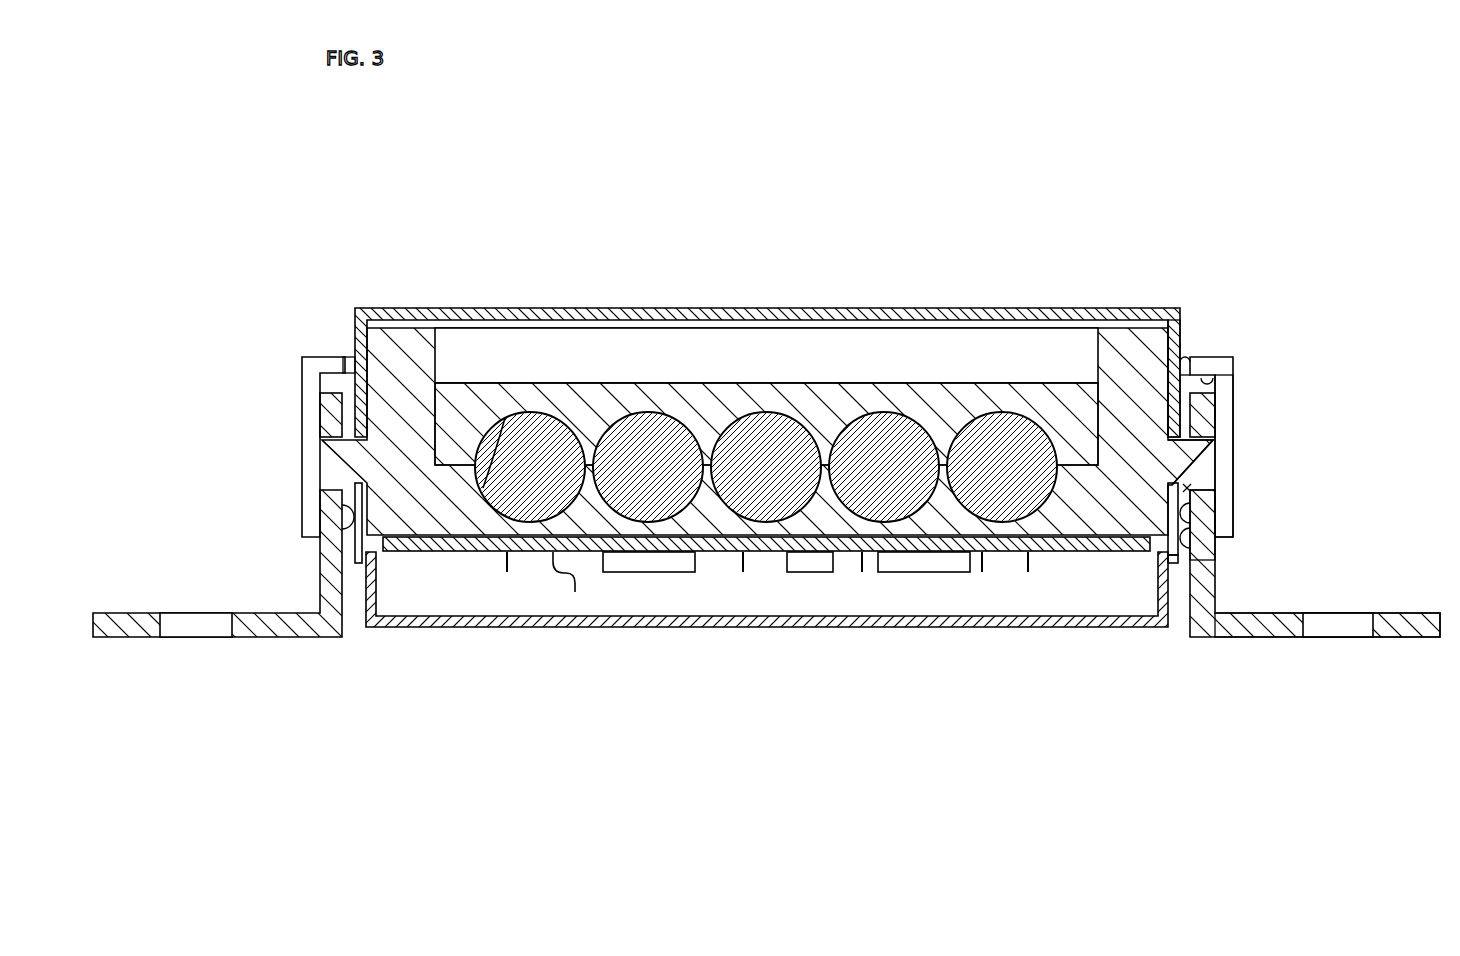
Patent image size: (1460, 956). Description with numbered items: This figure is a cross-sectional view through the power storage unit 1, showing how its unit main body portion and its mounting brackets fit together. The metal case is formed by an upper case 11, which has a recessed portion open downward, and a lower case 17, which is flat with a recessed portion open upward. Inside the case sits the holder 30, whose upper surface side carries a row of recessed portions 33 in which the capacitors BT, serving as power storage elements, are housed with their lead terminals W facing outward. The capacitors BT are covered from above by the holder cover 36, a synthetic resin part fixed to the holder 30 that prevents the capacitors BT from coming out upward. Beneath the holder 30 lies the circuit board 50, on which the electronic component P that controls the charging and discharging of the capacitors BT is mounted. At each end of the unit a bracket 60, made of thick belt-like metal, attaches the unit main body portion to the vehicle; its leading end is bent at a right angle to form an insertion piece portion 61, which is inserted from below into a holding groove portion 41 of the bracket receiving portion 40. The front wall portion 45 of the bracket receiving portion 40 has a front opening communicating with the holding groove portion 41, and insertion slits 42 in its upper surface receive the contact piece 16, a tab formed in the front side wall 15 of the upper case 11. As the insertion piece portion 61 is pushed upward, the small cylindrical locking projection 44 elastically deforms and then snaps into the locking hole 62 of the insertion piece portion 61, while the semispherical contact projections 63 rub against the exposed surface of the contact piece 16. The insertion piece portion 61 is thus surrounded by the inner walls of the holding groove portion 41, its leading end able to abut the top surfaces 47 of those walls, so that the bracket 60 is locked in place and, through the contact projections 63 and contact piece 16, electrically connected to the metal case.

The power storage unit 1 is at (831, 182).
The upper case 11 is at (862, 310).
The front side wall 15 is at (1182, 330).
The contact piece 16 is at (1183, 565).
The lower case 17 is at (815, 627).
The holder 30 is at (1142, 330).
The recessed portion 33 is at (505, 418).
The holder cover 36 is at (935, 383).
The bracket receiving portion 40 is at (1220, 357).
The holding groove portion 41 is at (1178, 490).
The insertion slit 42 is at (1185, 357).
The locking projection 44 is at (1210, 460).
The front wall portion 45 is at (1235, 425).
The top surface 47 is at (1217, 387).
The circuit board 50 is at (715, 552).
The bracket 60 is at (1405, 613).
The insertion piece portion 61 is at (1217, 415).
The locking hole 62 is at (1207, 483).
The contact projection 63 is at (1213, 557).
The capacitor BT is at (537, 417).
The electronic component P is at (640, 572).
The lead terminal W is at (575, 592).